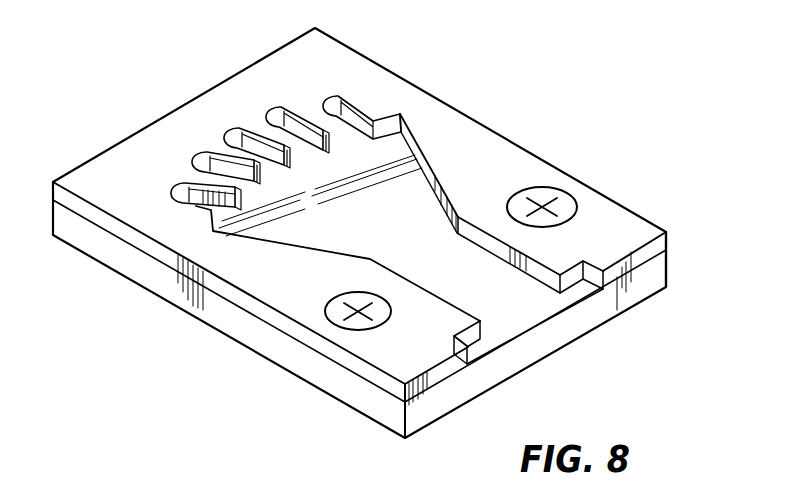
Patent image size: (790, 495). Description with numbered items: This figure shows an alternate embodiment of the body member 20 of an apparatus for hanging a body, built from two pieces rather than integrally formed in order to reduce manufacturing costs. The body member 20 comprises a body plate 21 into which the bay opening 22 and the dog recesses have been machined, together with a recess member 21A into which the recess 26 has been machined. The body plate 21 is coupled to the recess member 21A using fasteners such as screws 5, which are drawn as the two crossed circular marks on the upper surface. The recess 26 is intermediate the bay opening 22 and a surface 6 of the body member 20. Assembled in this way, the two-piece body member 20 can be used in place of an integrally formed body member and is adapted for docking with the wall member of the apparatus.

The body member 20 is at (345, 70).
The body plate 21 is at (457, 128).
The recess member 21A is at (642, 283).
The bay opening 22 is at (492, 246).
The recess 26 is at (572, 303).
The screws 5 is at (542, 194).
The surface 6 is at (358, 218).